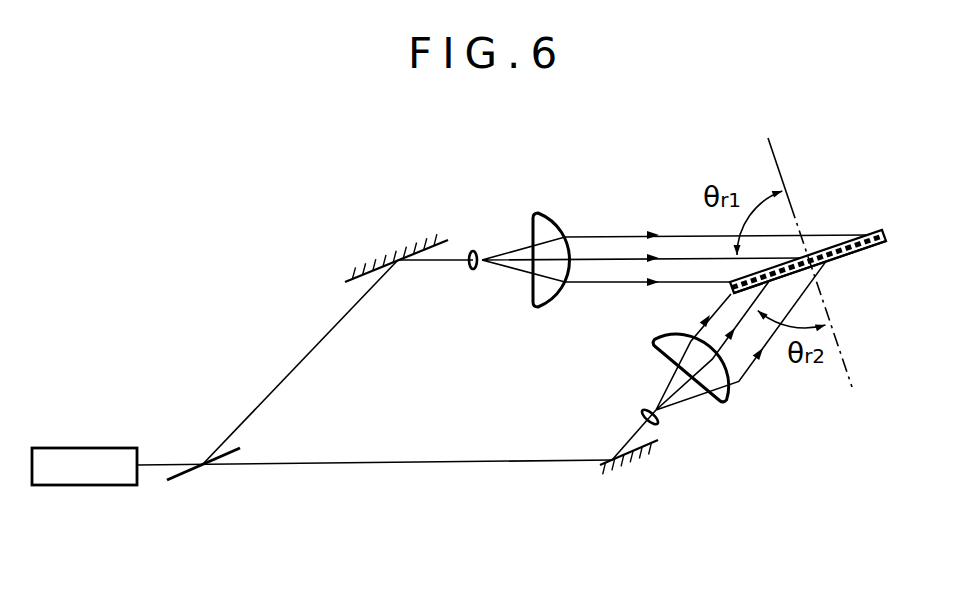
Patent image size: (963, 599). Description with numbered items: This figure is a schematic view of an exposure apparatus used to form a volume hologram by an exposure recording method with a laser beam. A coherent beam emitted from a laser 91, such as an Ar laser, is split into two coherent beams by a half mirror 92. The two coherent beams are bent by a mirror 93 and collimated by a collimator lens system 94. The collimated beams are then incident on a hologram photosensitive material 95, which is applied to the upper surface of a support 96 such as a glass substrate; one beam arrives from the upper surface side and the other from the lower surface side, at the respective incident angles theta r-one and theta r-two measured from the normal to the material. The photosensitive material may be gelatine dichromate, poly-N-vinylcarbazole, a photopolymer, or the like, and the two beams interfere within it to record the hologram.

The laser 91 is at (82, 487).
The half mirror 92 is at (183, 481).
The mirror 93 is at (398, 257).
The collimator lens system 94 is at (575, 206).
The hologram photosensitive material 95 is at (882, 229).
The support 96 is at (873, 247).